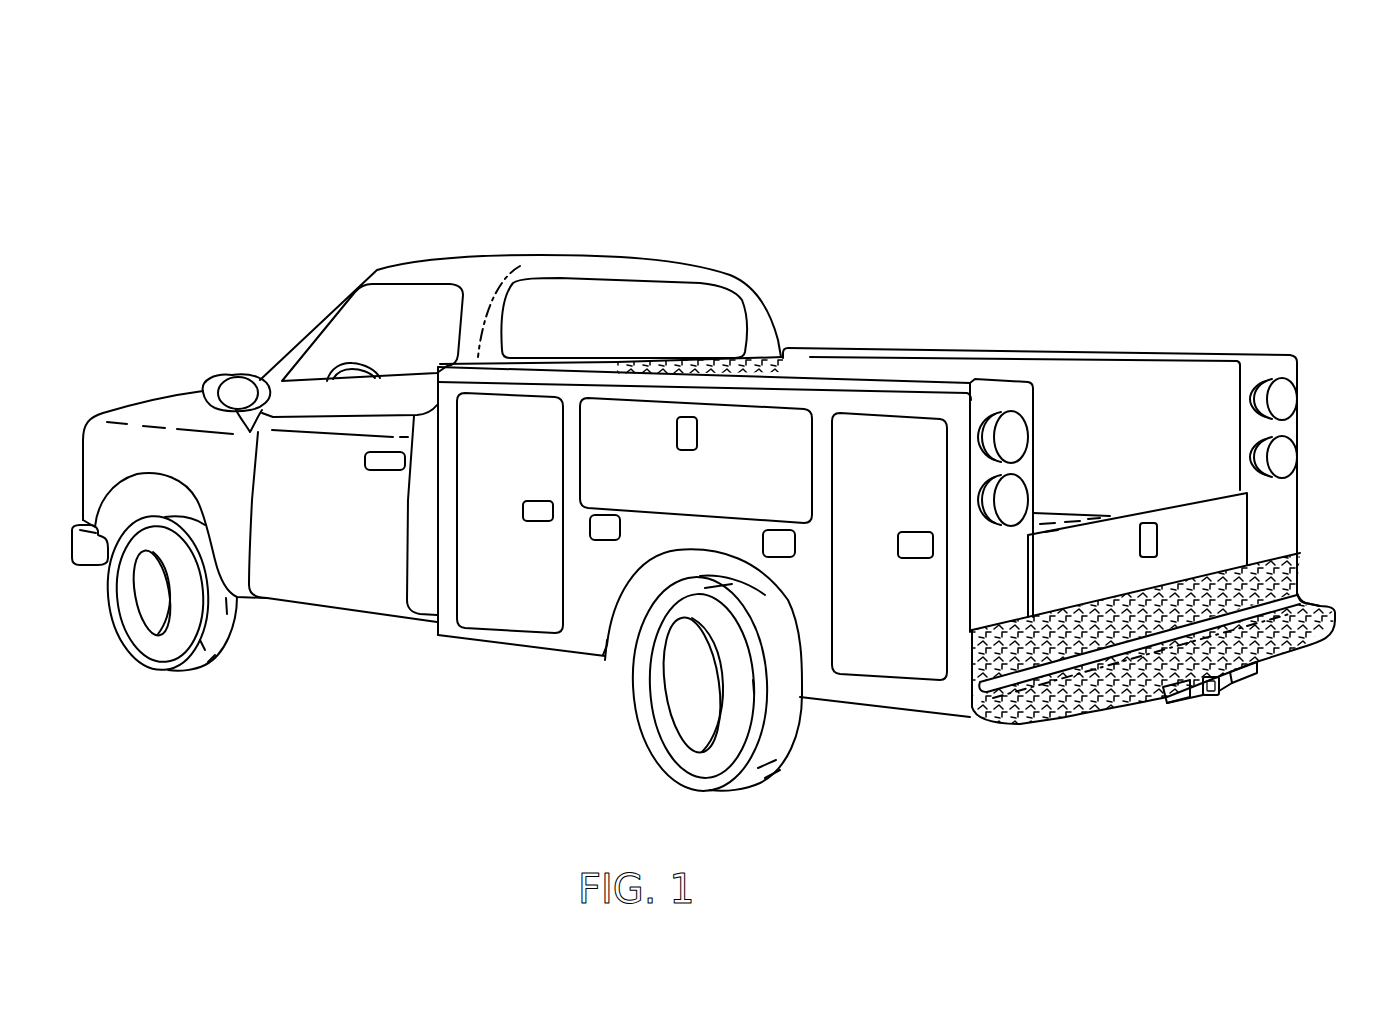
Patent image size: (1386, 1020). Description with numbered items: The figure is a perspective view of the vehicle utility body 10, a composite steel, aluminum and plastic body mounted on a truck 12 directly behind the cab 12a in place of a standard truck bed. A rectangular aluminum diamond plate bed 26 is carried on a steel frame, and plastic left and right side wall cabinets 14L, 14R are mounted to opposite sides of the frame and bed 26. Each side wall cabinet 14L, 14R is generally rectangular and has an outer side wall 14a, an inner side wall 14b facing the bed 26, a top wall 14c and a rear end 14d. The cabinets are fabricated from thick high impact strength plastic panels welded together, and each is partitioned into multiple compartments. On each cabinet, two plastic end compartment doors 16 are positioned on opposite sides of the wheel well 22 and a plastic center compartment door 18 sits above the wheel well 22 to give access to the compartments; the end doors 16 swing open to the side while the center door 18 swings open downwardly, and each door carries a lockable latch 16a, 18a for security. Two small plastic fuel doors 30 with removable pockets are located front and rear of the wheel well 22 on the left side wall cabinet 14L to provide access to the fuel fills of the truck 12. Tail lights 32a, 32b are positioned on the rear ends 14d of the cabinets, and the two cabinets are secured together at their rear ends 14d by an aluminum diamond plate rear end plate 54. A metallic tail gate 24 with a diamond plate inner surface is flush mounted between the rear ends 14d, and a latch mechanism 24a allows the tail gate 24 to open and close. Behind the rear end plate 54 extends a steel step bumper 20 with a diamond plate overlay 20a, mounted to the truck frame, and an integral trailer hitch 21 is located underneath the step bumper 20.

The vehicle utility body 10 is at (1210, 253).
The truck 12 is at (377, 268).
The cab 12a is at (633, 258).
The left side wall cabinet 14L is at (840, 400).
The right side wall cabinet 14R is at (1113, 377).
The outer side wall 14a is at (528, 638).
The inner side wall 14b is at (1190, 428).
The top wall 14c is at (929, 366).
The rear end 14d is at (1273, 500).
The end compartment door 16 is at (485, 613).
The lockable latch 16a is at (522, 522).
The center compartment door 18 is at (775, 473).
The lockable latch 18a is at (677, 447).
The step bumper 20 is at (1293, 647).
The diamond plate overlay 20a is at (1313, 603).
The trailer hitch 21 is at (1210, 697).
The wheel well 22 is at (687, 558).
The tail gate 24 is at (1104, 573).
The latch mechanism 24a is at (1157, 527).
The bed 26 is at (1050, 520).
The fuel door 30 is at (603, 540).
The tail light 32a is at (1275, 388).
The tail light 32b is at (1282, 453).
The rear end plate 54 is at (1277, 573).